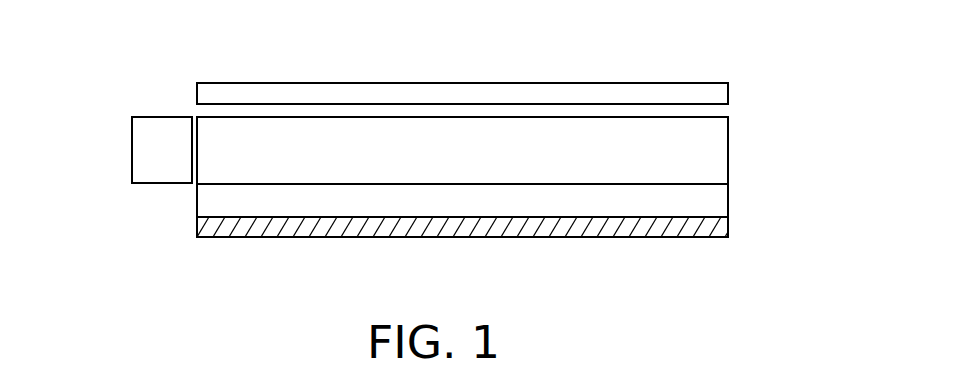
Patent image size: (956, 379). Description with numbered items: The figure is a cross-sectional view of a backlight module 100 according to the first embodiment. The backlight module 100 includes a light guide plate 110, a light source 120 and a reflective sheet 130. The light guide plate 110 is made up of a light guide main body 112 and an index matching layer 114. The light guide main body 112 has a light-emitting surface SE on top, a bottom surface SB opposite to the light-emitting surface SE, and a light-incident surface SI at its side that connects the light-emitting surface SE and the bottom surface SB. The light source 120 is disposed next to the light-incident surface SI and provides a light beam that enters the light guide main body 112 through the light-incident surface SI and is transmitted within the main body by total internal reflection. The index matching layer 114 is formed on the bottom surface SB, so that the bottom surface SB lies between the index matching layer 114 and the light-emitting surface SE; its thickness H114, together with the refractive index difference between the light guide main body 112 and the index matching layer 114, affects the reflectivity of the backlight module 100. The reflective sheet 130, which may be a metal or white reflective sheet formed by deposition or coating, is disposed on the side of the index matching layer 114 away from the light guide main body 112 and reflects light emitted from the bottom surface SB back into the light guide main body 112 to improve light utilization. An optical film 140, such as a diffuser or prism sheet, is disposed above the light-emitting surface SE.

The backlight module 100 is at (445, 154).
The light guide plate 110 is at (524, 167).
The light guide main body 112 is at (722, 147).
The index matching layer 114 is at (722, 197).
The light source 120 is at (143, 150).
The reflective sheet 130 is at (722, 228).
The optical film 140 is at (722, 97).
The light-incident surface SI is at (195, 143).
The light-emitting surface SE is at (230, 117).
The bottom surface SB is at (235, 185).
The thickness of the index matching layer H114 is at (298, 184).